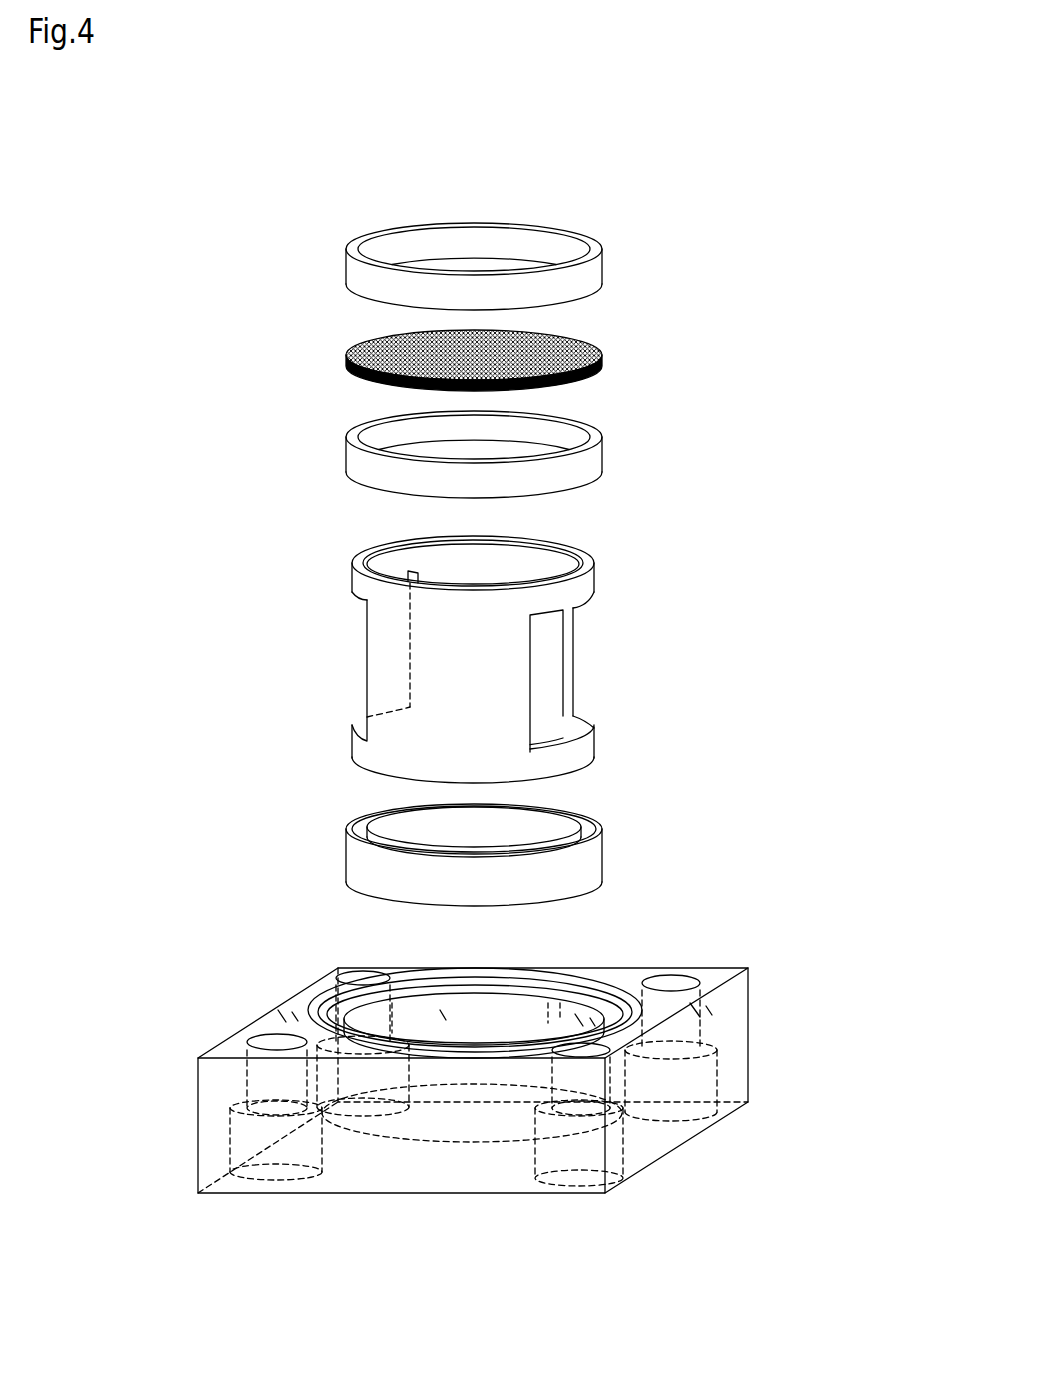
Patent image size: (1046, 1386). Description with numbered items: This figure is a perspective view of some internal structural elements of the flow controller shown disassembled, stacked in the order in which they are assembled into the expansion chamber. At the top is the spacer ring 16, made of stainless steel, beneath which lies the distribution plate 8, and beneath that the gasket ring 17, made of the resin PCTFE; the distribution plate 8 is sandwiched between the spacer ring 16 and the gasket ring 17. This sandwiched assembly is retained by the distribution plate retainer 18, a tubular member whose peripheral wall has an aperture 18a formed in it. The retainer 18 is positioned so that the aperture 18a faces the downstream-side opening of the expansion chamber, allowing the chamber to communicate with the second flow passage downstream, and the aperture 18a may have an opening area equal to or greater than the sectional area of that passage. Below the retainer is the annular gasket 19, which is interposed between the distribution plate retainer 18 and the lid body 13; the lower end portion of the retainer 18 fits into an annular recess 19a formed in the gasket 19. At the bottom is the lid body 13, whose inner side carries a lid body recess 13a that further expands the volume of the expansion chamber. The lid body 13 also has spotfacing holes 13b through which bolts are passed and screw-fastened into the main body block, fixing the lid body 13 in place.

The spacer ring 16 is at (603, 270).
The distribution plate 8 is at (604, 358).
The gasket ring 17 is at (604, 457).
The distribution plate retainer 18 is at (506, 650).
The aperture 18a is at (578, 664).
The annular gasket 19 is at (552, 831).
The annular recess 19a is at (583, 832).
The lid body 13 is at (542, 1113).
The lid body recess 13a is at (577, 1012).
The spotfacing hole 13b is at (292, 1193).